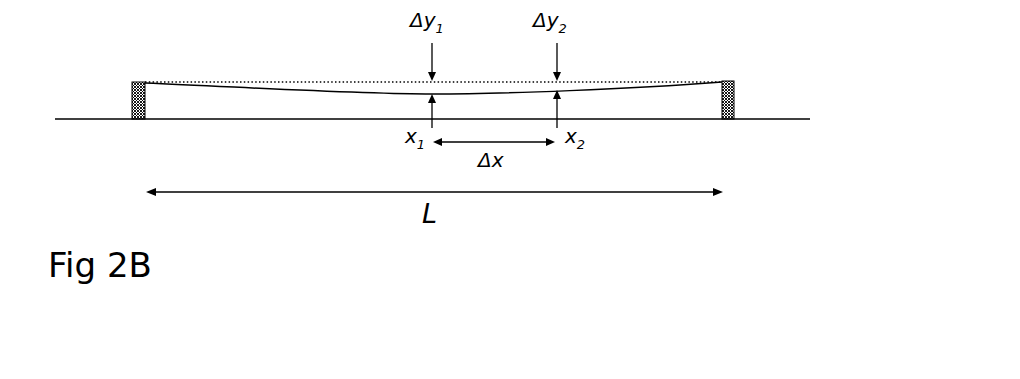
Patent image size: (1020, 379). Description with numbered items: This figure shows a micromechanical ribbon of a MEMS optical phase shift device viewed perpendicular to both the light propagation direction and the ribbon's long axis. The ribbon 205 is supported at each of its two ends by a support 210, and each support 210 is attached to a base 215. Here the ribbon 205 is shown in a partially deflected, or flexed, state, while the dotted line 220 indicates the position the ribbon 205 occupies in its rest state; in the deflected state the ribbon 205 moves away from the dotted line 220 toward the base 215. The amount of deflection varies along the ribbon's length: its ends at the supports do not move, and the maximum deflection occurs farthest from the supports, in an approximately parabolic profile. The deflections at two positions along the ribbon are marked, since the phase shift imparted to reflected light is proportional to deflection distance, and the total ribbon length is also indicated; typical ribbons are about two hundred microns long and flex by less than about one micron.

The ribbon 205 is at (639, 84).
The support 210 is at (735, 89).
The base 215 is at (797, 118).
The dotted line 220 is at (282, 81).